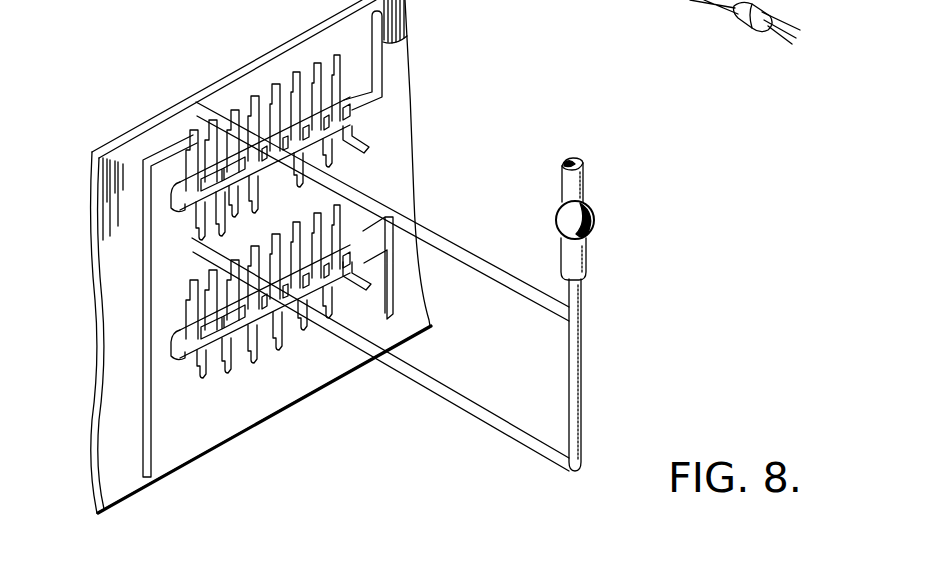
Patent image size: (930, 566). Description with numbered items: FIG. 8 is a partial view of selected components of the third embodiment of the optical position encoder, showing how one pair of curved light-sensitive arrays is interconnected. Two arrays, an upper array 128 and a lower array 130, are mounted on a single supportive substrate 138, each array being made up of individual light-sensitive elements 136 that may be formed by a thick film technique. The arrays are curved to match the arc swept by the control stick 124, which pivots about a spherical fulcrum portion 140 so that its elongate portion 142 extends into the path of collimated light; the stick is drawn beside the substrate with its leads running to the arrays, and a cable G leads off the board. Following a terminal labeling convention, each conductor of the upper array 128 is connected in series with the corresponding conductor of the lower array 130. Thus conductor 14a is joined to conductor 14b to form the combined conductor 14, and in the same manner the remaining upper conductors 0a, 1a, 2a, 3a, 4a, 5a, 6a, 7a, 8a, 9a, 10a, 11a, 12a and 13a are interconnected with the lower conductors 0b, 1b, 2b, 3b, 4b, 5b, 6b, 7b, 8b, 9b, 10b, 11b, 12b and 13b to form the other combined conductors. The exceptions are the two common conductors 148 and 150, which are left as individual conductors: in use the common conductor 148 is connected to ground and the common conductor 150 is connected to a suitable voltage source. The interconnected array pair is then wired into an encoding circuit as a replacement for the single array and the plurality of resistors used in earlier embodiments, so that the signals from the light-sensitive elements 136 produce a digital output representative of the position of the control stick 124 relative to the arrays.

The upper light-sensitive array 128 is at (160, 211).
The lower light-sensitive array 130 is at (163, 338).
The supportive substrate 138 is at (196, 462).
The interconnected conductor 14 is at (147, 432).
The cable G is at (400, 21).
The common conductor 148 is at (383, 71).
The common conductor 150 is at (395, 294).
The light-sensitive element 136 is at (320, 98).
The conductor 14a is at (186, 150).
The conductor 12a is at (205, 138).
The conductor 10a is at (227, 126).
The conductor 8a is at (249, 112).
The conductor 6a is at (270, 100).
The conductor 4a is at (291, 88).
The conductor 2a is at (312, 78).
The conductor 0a is at (333, 67).
The conductor 13a is at (197, 234).
The conductor 11a is at (222, 236).
The conductor 9a is at (236, 217).
The conductor 7a is at (258, 210).
The conductor 5a is at (300, 187).
The conductor 3a is at (332, 158).
The conductor 1a is at (364, 140).
The conductor 14b is at (186, 294).
The conductor 12b is at (206, 284).
The conductor 10b is at (228, 278).
The conductor 8b is at (248, 262).
The conductor 6b is at (270, 254).
The conductor 4b is at (291, 240).
The conductor 2b is at (312, 230).
The conductor 0b is at (333, 218).
The conductor 13b is at (202, 380).
The conductor 11b is at (229, 374).
The conductor 9b is at (256, 363).
The conductor 7b is at (281, 349).
The conductor 5b is at (306, 330).
The conductor 3b is at (332, 318).
The conductor 1b is at (358, 286).
The elongate portion 142 is at (583, 354).
The spherical fulcrum portion 140 is at (597, 222).
The control stick 124 is at (587, 182).